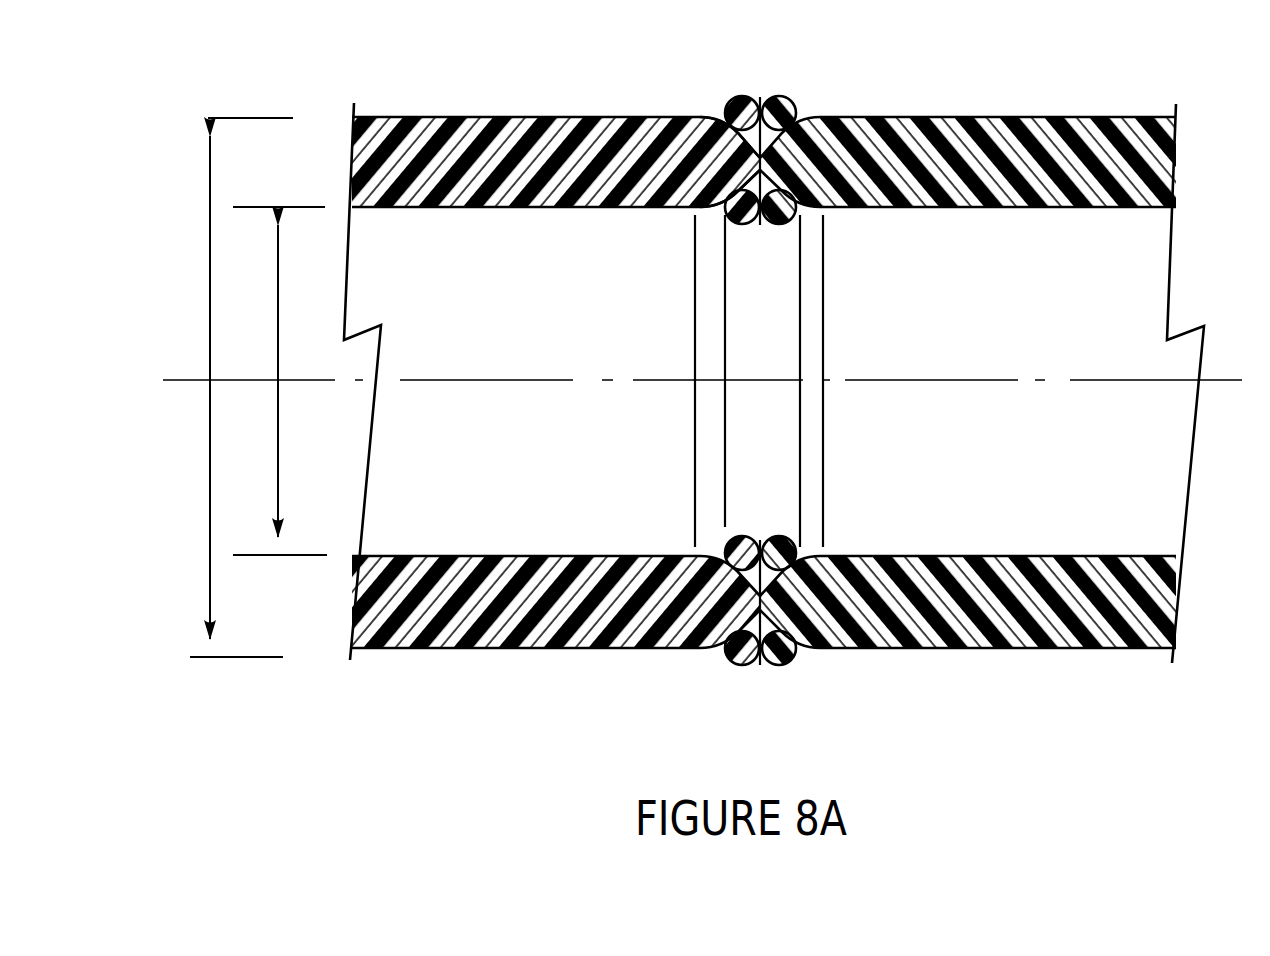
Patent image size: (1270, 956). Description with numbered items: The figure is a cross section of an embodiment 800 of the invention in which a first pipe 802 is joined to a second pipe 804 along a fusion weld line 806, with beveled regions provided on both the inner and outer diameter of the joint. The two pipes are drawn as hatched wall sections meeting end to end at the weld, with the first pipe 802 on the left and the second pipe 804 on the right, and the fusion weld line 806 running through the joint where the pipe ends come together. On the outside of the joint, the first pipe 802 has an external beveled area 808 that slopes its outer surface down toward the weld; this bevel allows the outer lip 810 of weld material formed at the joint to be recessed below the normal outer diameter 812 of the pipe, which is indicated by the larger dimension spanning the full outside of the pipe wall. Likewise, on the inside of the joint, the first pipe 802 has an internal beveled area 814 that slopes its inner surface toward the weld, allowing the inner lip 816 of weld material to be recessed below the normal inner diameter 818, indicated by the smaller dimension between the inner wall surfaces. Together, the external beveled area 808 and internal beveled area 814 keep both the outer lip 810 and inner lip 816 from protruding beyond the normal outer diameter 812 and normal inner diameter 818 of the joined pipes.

The embodiment 800 is at (753, 699).
The first pipe 802 is at (383, 537).
The second pipe 804 is at (1119, 497).
The fusion weld line 806 is at (647, 647).
The external beveled area 808 is at (711, 121).
The outer lip 810 is at (737, 97).
The normal outer diameter 812 is at (210, 185).
The internal beveled area 814 is at (713, 220).
The inner lip 816 is at (742, 222).
The normal inner diameter 818 is at (278, 447).